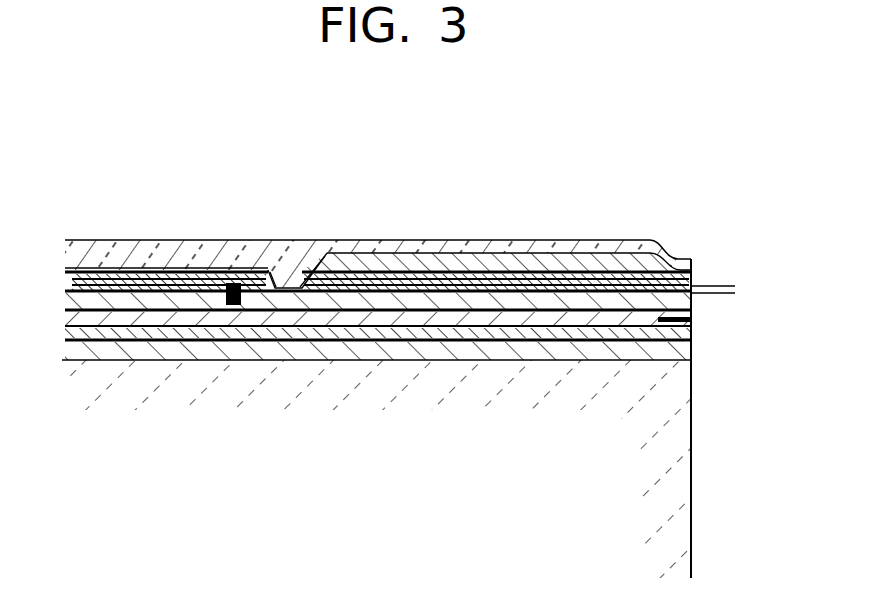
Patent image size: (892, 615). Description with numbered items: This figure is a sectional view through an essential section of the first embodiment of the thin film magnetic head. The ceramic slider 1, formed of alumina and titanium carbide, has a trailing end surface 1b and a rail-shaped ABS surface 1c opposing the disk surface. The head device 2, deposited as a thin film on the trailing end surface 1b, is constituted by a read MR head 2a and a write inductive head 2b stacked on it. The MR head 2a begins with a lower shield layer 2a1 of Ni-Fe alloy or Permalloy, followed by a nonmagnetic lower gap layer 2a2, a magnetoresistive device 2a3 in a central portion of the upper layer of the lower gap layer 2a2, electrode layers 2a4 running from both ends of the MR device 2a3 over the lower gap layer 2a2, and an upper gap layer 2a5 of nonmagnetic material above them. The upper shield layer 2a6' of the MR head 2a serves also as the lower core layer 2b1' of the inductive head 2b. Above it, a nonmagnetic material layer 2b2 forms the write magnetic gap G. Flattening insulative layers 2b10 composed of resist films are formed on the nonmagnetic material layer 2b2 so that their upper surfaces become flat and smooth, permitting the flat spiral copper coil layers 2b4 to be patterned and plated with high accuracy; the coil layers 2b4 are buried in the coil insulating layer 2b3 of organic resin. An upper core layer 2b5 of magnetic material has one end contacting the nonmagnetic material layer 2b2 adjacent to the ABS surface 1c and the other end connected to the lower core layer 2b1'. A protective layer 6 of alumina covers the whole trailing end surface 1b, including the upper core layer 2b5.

The slider 1 is at (645, 510).
The trailing end surface 1b is at (146, 358).
The ABS surface 1c is at (692, 466).
The head device 2 is at (613, 212).
The MR head 2a is at (55, 295).
The inductive head 2b is at (55, 242).
The lower shield layer 2a1 is at (548, 345).
The lower gap layer 2a2 is at (690, 336).
The magnetoresistive device 2a3 is at (690, 326).
The electrode layers 2a4 is at (442, 327).
The upper gap layer 2a5 is at (690, 318).
The upper shield layer 2a6' is at (378, 226).
The lower core layer 2b1' is at (378, 217).
The nonmagnetic material layer 2b2 is at (72, 343).
The coil insulating layer 2b3 is at (100, 268).
The coil layers 2b4 is at (158, 270).
The upper core layer 2b5 is at (392, 272).
The flattening insulative layers 2b10 is at (315, 272).
The protective layer 6 is at (213, 258).
The write magnetic gap G is at (727, 262).